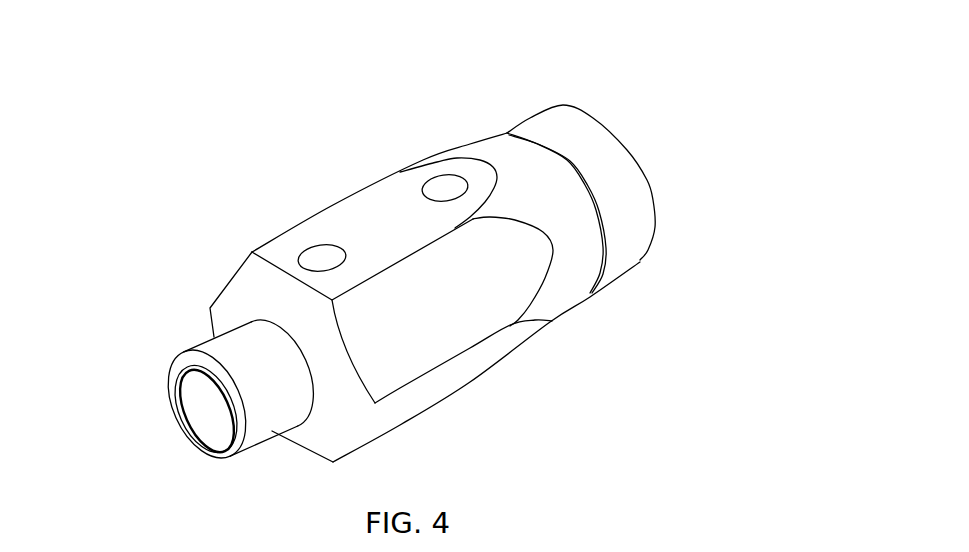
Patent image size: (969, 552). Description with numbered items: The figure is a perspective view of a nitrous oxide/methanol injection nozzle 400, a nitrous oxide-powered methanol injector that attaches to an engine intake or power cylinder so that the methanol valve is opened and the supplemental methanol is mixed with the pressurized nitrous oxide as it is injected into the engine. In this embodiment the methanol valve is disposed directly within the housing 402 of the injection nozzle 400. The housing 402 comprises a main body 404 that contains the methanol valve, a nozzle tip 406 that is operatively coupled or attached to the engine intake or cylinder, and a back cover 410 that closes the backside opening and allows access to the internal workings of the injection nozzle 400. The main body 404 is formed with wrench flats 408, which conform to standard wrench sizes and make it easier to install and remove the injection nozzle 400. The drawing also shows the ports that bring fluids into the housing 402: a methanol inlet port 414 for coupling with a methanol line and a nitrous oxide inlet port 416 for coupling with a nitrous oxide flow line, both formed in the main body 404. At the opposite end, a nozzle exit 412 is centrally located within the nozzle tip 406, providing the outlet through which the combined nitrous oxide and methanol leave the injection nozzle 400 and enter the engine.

The nitrous oxide/methanol injection nozzle 400 is at (648, 77).
The housing 402 is at (213, 291).
The main body 404 is at (503, 363).
The nozzle tip 406 is at (205, 356).
The wrench flats 408 is at (510, 283).
The back cover 410 is at (652, 193).
The nozzle exit 412 is at (215, 403).
The methanol inlet port 414 is at (333, 253).
The nitrous oxide inlet port 416 is at (443, 188).